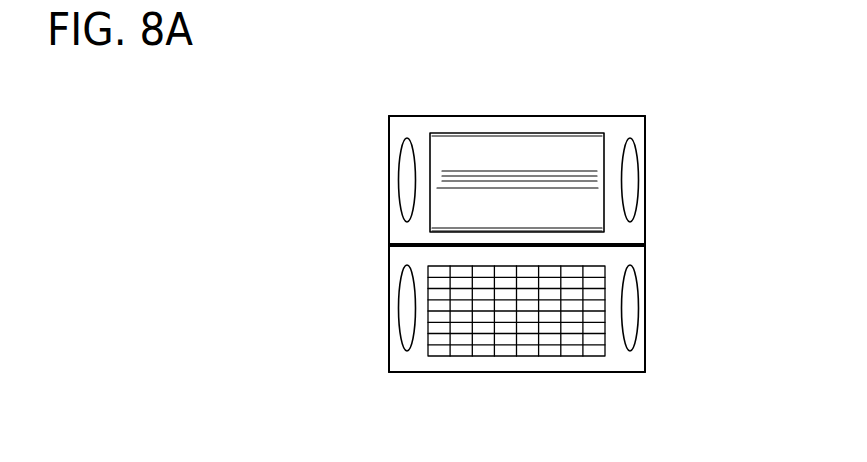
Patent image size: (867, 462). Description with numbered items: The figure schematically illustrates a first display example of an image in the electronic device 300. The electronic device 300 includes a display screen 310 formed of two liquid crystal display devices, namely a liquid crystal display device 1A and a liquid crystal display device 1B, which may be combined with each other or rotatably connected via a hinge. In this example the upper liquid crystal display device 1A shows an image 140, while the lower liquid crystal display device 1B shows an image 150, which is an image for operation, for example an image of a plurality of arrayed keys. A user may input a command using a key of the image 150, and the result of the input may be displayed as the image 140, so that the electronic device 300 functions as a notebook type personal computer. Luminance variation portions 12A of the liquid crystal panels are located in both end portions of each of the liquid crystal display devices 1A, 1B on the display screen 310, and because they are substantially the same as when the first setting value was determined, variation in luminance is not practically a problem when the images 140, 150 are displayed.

The electronic device 300 is at (667, 95).
The display screen 310 is at (581, 244).
The liquid crystal display device 1A is at (645, 226).
The liquid crystal display device 1B is at (548, 309).
The image 140 is at (525, 133).
The image 150 is at (524, 356).
The luminance variation portion 12A is at (399, 181).